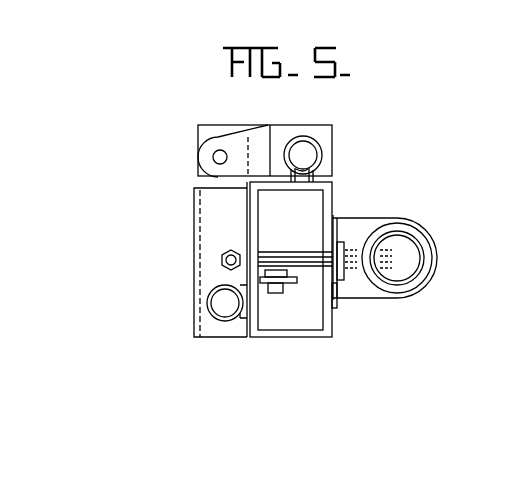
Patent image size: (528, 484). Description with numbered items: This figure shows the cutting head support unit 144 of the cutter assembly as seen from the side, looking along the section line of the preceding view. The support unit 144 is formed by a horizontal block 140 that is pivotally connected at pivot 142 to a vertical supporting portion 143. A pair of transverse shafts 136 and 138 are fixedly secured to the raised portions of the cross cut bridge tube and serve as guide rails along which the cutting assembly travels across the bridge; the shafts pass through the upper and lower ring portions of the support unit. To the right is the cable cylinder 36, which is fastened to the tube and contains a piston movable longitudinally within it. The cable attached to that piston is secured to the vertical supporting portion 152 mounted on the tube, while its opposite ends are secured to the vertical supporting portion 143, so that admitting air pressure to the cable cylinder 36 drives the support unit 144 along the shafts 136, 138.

The cable cylinder 36 is at (437, 262).
The transverse shaft 136 is at (325, 146).
The transverse shaft 138 is at (207, 303).
The horizontal block 140 is at (333, 160).
The pivotal connection 142 is at (213, 152).
The vertical supporting portion 143 is at (194, 236).
The cutting head support unit 144 is at (175, 190).
The vertical supporting portion 152 is at (313, 252).